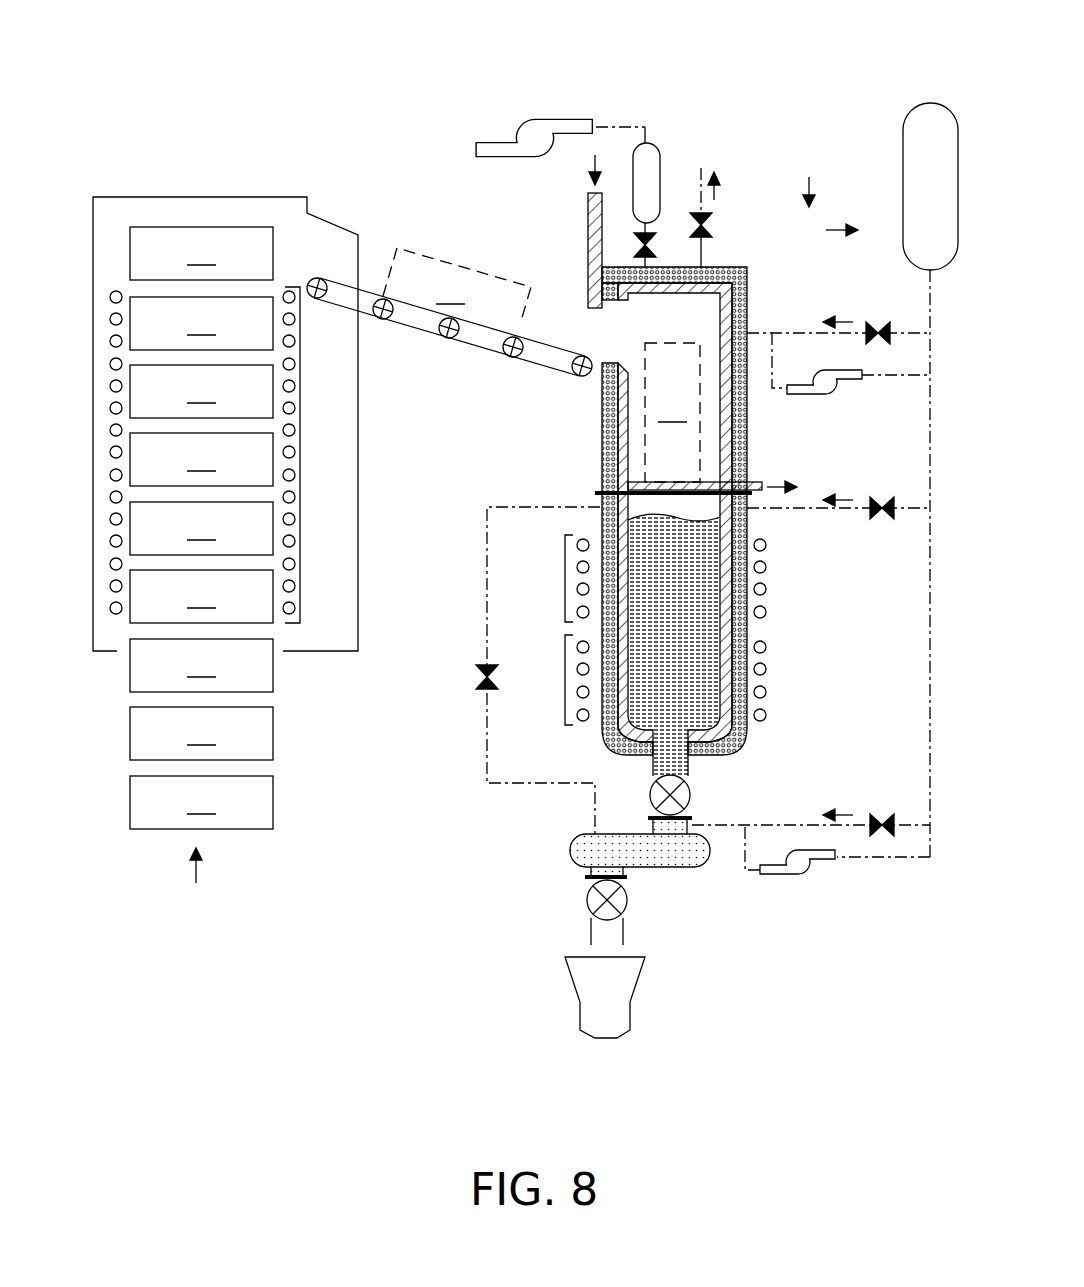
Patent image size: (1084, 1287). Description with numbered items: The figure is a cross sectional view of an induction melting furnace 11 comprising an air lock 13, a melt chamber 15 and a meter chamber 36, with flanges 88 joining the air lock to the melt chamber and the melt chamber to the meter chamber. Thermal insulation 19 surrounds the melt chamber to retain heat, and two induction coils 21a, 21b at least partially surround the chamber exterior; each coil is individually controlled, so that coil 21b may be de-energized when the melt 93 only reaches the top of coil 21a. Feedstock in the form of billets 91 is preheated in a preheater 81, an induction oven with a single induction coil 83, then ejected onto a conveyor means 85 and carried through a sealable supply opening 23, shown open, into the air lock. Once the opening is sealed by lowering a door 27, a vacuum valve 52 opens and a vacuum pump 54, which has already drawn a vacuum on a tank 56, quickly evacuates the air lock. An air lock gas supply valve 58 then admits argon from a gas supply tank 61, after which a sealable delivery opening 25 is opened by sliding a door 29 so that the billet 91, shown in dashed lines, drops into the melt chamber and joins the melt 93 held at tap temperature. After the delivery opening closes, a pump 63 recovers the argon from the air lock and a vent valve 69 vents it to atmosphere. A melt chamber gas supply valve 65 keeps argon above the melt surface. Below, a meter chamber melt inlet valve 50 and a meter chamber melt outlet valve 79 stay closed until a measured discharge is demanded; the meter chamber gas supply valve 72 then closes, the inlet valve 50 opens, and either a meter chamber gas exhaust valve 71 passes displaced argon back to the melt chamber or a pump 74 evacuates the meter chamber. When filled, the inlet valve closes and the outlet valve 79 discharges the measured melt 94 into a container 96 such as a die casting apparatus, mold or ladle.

The induction melting furnace 11 is at (763, 63).
The air lock 13 is at (587, 430).
The melt chamber 15 is at (805, 617).
The thermal insulation 19 is at (743, 733).
The induction coil 21a is at (563, 683).
The induction coil 21b is at (563, 580).
The sealable supply opening 23 is at (597, 330).
The sealable delivery opening 25 is at (672, 497).
The door 27 is at (593, 247).
The sliding door 29 is at (753, 483).
The meter chamber 36 is at (565, 852).
The meter chamber melt inlet valve 50 is at (683, 794).
The vacuum valve 52 is at (664, 249).
The vacuum pump 54 is at (532, 128).
The tank 56 is at (650, 172).
The air lock gas supply valve 58 is at (838, 319).
The gas supply tank 61 is at (915, 125).
The pump 63 is at (818, 386).
The melt chamber gas supply valve 65 is at (838, 492).
The vent valve 69 is at (741, 199).
The meter chamber gas exhaust valve 71 is at (523, 670).
The meter chamber gas supply valve 72 is at (811, 811).
The pump 74 is at (800, 865).
The meter chamber melt outlet valve 79 is at (618, 898).
The preheater 81 is at (175, 197).
The induction coil 83 is at (303, 457).
The conveyor means 85 is at (415, 318).
The flanges 88 is at (597, 492).
The billets 91 is at (415, 528).
The melt 93 is at (693, 580).
The measured discharge melt 94 is at (665, 855).
The container 96 is at (623, 1012).